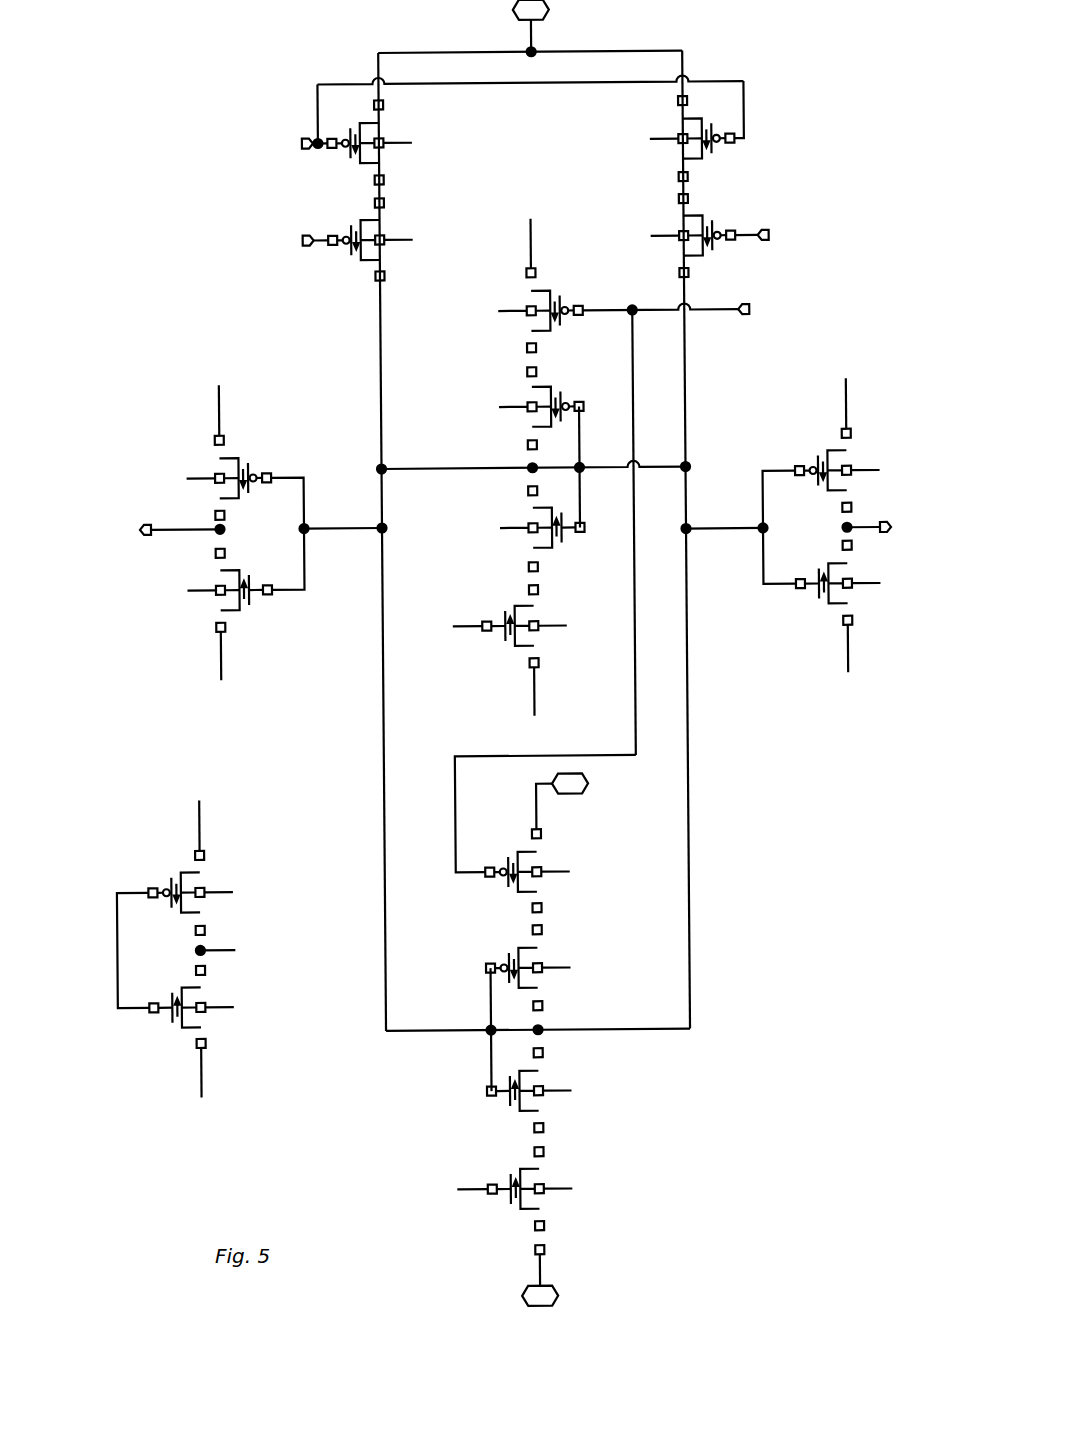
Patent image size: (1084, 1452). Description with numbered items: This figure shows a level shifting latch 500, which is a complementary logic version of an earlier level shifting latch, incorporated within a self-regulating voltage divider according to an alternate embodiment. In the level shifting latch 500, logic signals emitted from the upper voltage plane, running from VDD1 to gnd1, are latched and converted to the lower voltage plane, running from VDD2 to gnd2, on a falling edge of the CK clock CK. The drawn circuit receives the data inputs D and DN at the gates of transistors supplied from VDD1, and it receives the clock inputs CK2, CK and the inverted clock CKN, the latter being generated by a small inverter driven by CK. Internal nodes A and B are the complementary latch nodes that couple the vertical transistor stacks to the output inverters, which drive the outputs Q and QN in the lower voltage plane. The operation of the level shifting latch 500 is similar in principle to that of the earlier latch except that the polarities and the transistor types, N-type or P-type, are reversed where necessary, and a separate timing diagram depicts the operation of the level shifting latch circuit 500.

The level shifting latch 500 is at (714, 24).
The node A is at (345, 518).
The node B is at (722, 518).
The Q output terminal Q is at (166, 531).
The QN output terminal QN is at (890, 528).
The D input terminal D is at (299, 241).
The DN input terminal DN is at (770, 236).
The CK clock CK is at (685, 311).
The CKN inverted clock input CKN is at (442, 626).
The CK2 clock input CK2 is at (282, 144).